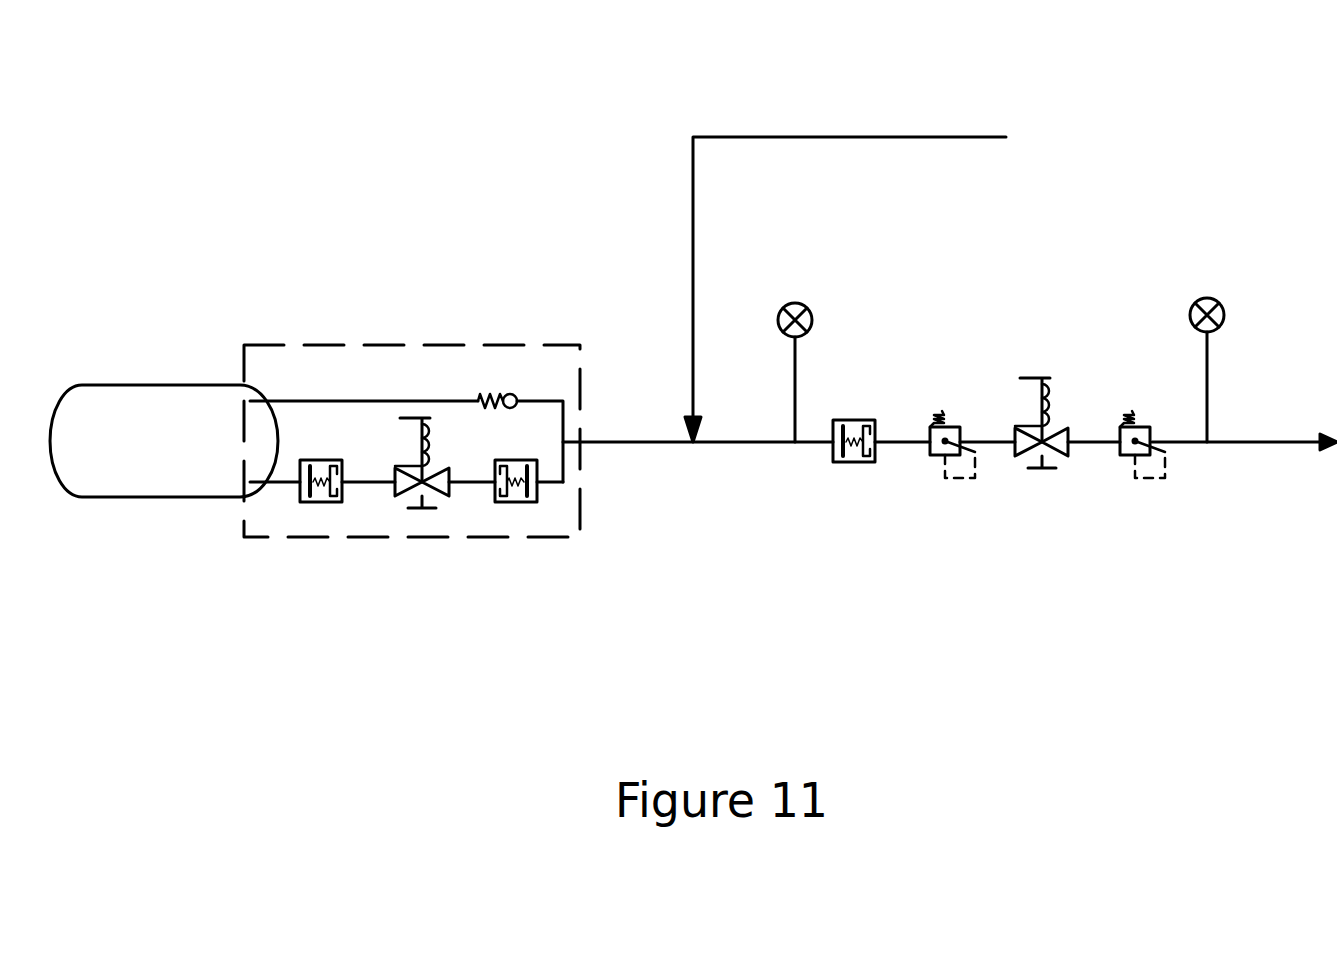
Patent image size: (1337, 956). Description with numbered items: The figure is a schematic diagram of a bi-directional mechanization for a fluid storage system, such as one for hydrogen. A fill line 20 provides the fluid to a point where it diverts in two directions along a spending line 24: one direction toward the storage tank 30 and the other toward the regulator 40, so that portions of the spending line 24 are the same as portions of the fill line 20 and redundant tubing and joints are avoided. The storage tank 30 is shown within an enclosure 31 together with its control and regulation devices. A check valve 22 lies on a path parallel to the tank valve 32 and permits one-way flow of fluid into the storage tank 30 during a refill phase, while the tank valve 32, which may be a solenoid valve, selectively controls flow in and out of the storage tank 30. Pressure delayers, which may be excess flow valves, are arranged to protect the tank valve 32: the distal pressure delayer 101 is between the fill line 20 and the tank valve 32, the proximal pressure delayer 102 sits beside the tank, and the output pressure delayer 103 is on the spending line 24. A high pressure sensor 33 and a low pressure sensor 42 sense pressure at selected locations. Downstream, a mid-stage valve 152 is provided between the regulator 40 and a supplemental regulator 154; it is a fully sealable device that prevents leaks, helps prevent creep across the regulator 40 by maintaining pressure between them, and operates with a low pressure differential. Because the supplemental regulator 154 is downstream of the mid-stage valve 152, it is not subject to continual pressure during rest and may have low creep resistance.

The fill line 20 is at (798, 137).
The check valve 22 is at (510, 393).
The spending line 24 is at (660, 442).
The storage tank 30 is at (164, 441).
The tank assembly enclosure 31 is at (318, 345).
The tank valve 32 is at (420, 515).
The high pressure sensor 33 is at (780, 318).
The regulator 40 is at (955, 427).
The low pressure sensor 42 is at (1190, 310).
The distal pressure delayer 101 is at (515, 505).
The proximal pressure delayer 102 is at (321, 505).
The output pressure delayer 103 is at (862, 462).
The mid-stage valve 152 is at (1042, 470).
The supplemental regulator 154 is at (1135, 480).